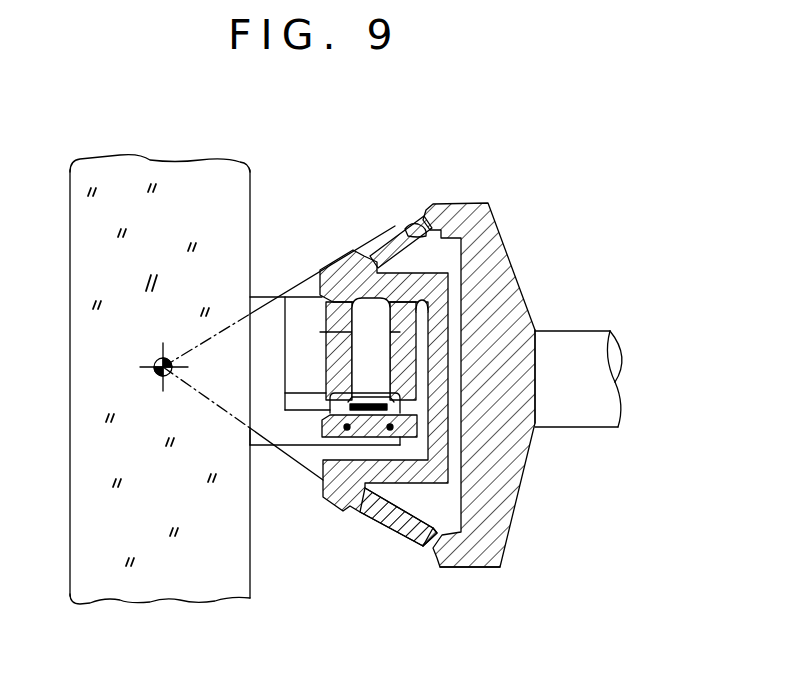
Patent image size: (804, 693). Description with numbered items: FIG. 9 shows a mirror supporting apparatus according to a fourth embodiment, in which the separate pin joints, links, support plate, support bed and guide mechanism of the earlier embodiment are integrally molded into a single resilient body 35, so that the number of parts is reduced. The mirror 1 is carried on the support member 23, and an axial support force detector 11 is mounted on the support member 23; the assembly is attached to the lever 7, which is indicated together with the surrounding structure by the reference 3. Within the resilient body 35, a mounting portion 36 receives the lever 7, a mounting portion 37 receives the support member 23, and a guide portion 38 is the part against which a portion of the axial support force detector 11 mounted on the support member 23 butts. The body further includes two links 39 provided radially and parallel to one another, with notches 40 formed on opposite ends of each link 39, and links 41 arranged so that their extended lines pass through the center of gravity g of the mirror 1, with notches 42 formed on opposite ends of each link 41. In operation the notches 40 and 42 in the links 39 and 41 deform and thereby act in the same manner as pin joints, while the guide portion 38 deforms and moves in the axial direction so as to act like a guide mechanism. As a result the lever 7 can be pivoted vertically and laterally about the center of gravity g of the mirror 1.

The mirror 1 is at (155, 605).
The center of gravity g is at (152, 373).
The axial support force detector 11 is at (288, 370).
The support member 23 is at (258, 440).
The mounting portion of the support member 37 is at (318, 438).
The links 39 is at (387, 357).
The notches 40 is at (342, 312).
The guide portion 38 is at (447, 290).
The mounting portion of the lever 36 is at (533, 312).
The resilient body 35 is at (485, 568).
The links 41 is at (437, 207).
The notches 42 is at (426, 228).
The lever 7 is at (591, 428).
The mirror assembly 3 is at (637, 379).